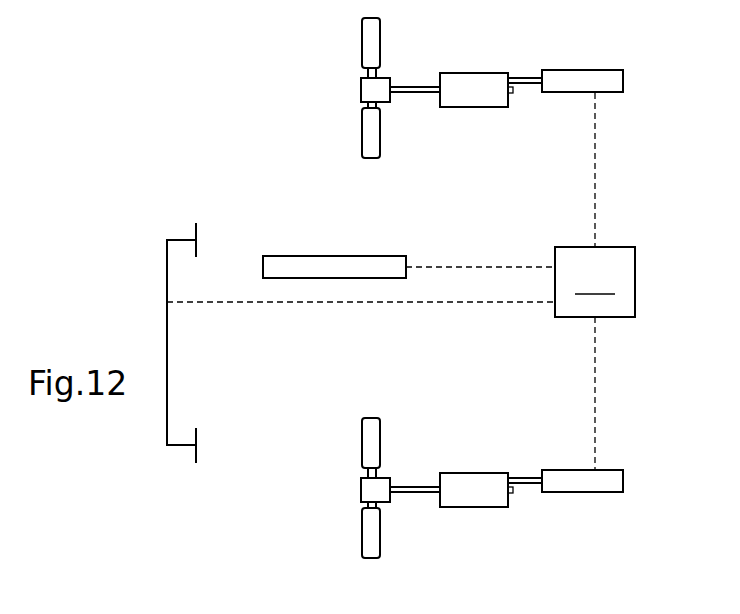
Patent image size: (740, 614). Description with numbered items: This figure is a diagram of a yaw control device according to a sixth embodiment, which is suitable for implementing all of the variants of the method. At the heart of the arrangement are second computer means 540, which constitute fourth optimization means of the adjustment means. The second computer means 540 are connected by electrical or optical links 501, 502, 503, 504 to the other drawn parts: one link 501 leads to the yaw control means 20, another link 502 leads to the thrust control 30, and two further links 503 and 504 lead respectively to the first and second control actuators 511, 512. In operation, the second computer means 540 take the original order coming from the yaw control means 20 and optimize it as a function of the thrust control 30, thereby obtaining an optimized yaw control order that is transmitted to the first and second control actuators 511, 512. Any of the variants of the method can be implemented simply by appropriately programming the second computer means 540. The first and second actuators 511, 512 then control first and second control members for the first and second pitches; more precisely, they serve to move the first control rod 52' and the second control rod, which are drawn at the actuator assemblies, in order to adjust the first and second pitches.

The yaw control means 20 is at (146, 274).
The thrust control 30 is at (322, 245).
The first control rod 52' is at (451, 88).
The first control actuator 511 is at (592, 70).
The second control actuator 512 is at (590, 493).
The second computer means 540 is at (595, 282).
The electrical or optical link 501 is at (462, 303).
The electrical or optical link 502 is at (493, 266).
The electrical or optical link 503 is at (595, 173).
The electrical or optical link 504 is at (595, 382).